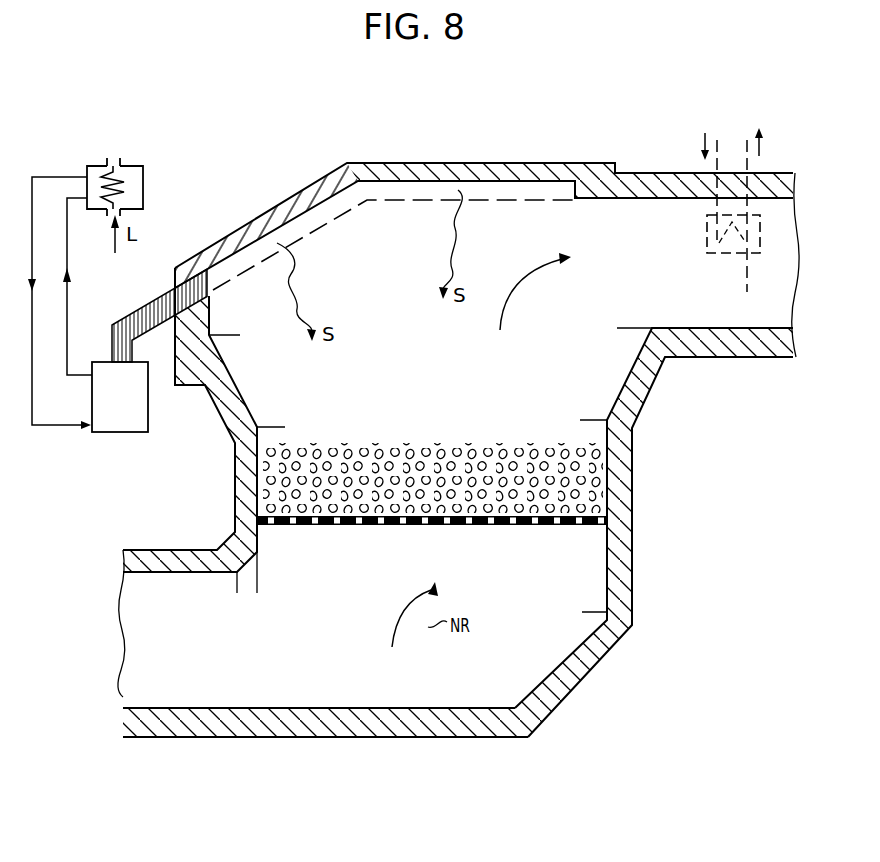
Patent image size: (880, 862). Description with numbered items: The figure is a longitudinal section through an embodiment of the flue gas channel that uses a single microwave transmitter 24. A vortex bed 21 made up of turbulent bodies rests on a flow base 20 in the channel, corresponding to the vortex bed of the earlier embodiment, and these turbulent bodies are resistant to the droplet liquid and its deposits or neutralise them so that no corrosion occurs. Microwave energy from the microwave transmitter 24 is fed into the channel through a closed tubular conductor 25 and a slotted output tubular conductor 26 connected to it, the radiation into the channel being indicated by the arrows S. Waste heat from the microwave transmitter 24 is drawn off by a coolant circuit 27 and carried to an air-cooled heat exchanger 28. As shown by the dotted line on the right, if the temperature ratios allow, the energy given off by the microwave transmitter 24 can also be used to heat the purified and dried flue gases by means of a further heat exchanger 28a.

The flow base 20 is at (515, 527).
The vortex bed 21 is at (598, 483).
The microwave transmitter 24 is at (131, 415).
The closed tubular conductor 25 is at (148, 303).
The slotted output tubular conductor 26 is at (385, 199).
The coolant circuit 27 is at (67, 297).
The air-cooled heat exchanger 28 is at (143, 181).
The heat exchanger 28a is at (732, 212).